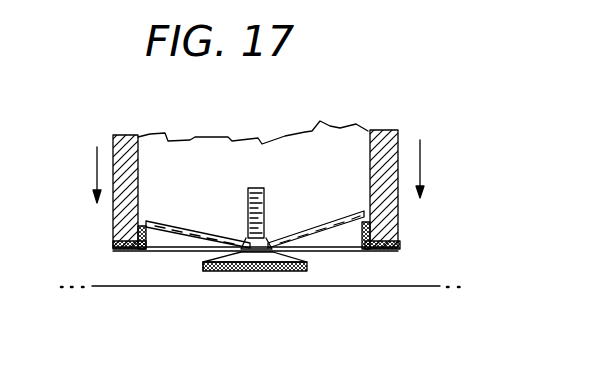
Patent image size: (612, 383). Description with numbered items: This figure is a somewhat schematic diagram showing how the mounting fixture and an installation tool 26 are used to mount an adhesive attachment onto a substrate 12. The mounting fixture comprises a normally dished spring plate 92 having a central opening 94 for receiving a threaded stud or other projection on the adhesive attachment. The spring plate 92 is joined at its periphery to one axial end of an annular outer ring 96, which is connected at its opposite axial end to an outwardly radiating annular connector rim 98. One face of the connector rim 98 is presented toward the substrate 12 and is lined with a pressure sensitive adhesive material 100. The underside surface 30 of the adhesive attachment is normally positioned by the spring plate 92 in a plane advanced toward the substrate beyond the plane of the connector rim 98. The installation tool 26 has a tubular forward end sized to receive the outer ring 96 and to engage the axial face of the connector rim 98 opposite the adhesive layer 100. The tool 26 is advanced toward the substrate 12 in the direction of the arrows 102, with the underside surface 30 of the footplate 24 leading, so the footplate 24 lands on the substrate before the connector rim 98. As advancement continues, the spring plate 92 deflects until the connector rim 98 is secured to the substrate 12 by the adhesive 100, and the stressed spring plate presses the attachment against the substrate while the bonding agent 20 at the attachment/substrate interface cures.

The substrate 12 is at (355, 287).
The bonding agent 20 is at (248, 275).
The footplate 24 is at (205, 274).
The installation tool 26 is at (117, 120).
The underside surface 30 is at (310, 268).
The spring plate 92 is at (320, 229).
The central opening 94 is at (246, 240).
The outer ring 96 is at (153, 250).
The connector rim 98 is at (400, 247).
The pressure sensitive adhesive material 100 is at (121, 252).
The arrows 102 is at (94, 163).